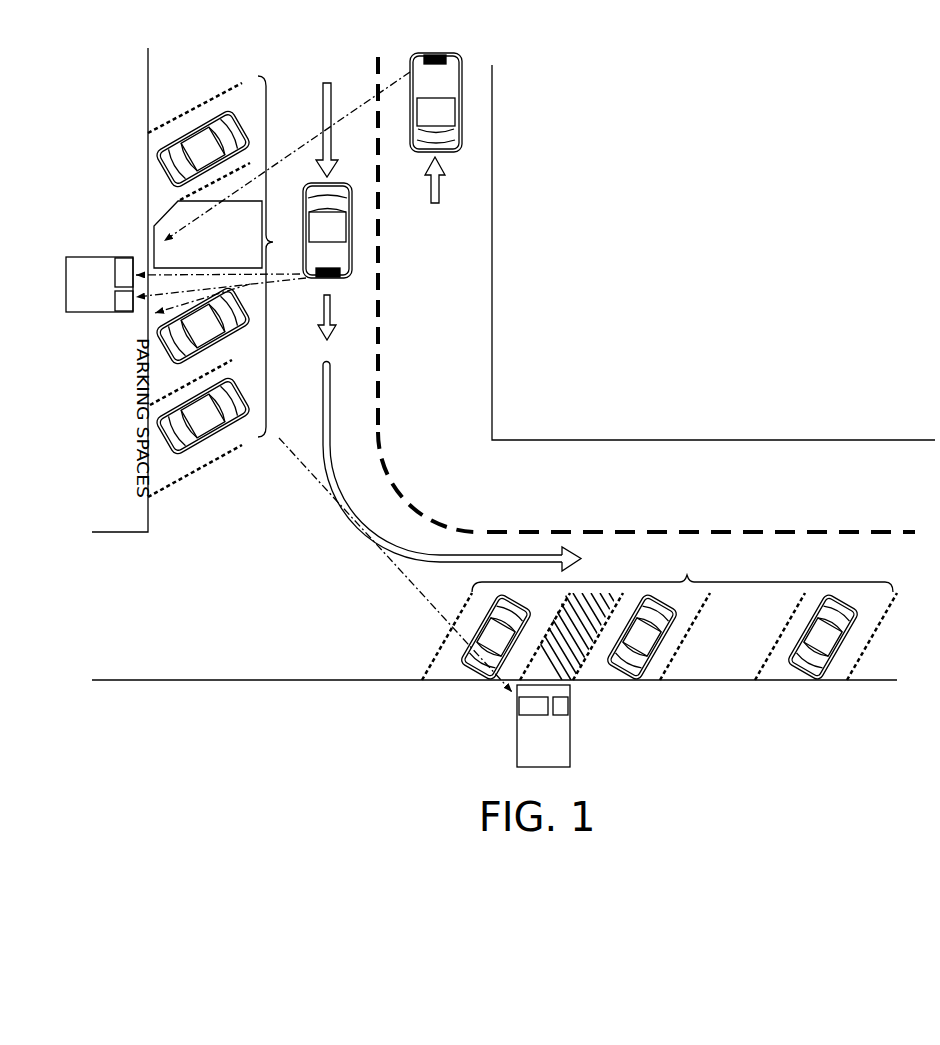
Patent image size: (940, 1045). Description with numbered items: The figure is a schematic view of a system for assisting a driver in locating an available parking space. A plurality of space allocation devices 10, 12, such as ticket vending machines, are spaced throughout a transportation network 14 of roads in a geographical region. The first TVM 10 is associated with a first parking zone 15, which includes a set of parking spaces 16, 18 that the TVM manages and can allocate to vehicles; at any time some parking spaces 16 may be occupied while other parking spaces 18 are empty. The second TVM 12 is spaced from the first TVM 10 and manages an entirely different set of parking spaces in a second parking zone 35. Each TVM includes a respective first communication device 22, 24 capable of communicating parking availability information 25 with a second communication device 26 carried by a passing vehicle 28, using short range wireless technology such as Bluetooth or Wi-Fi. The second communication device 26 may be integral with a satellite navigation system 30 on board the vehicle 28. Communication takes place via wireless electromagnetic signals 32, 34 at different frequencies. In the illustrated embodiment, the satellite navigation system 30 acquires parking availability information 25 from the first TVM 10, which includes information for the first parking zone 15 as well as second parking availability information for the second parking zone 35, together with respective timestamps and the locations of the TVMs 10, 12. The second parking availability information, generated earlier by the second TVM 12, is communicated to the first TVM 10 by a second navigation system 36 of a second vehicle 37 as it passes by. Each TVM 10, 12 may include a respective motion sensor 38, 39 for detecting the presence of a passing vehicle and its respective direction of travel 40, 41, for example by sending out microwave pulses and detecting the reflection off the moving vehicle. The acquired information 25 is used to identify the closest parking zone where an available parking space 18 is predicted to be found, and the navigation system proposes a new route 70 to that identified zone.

The space allocation device 10 is at (88, 316).
The space allocation device 12 is at (558, 742).
The transportation network 14 is at (466, 274).
The parking zone 15 is at (275, 256).
The parking space 16 is at (245, 103).
The parking space 18 is at (720, 661).
The first communication device 22 is at (137, 256).
The first communication device 24 is at (518, 707).
The parking availability information 25 is at (250, 201).
The second communication device 26 is at (342, 271).
The passing vehicle 28 is at (352, 226).
The satellite navigation system 30 is at (348, 258).
The wireless electromagnetic signal 32 is at (283, 284).
The wireless electromagnetic signal 34 is at (279, 436).
The second parking zone 35 is at (682, 571).
The second navigation system 36 is at (447, 60).
The second vehicle 37 is at (463, 112).
The motion sensor 38 is at (125, 314).
The motion sensor 39 is at (569, 707).
The direction of travel 40 is at (336, 305).
The direction of travel 41 is at (444, 190).
The route 70 is at (482, 552).